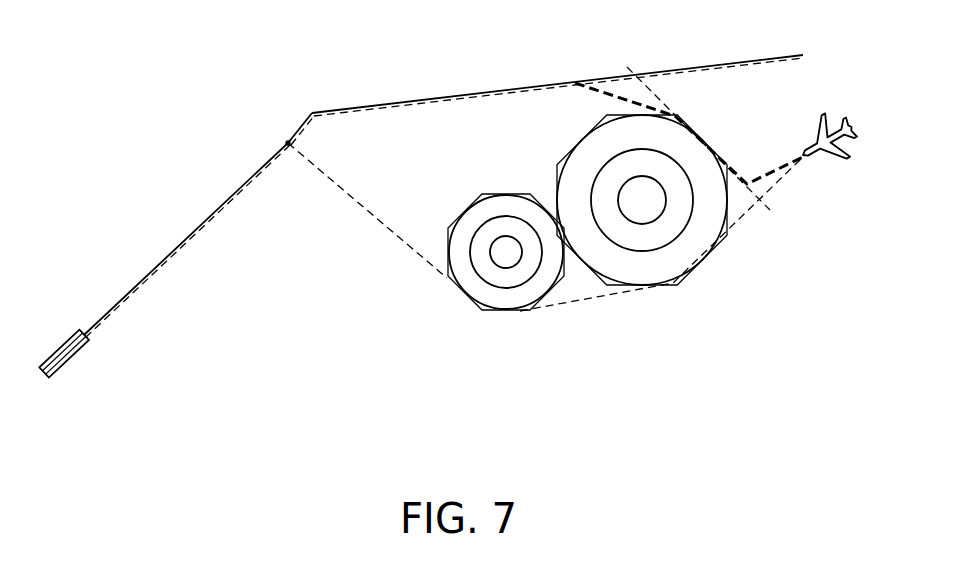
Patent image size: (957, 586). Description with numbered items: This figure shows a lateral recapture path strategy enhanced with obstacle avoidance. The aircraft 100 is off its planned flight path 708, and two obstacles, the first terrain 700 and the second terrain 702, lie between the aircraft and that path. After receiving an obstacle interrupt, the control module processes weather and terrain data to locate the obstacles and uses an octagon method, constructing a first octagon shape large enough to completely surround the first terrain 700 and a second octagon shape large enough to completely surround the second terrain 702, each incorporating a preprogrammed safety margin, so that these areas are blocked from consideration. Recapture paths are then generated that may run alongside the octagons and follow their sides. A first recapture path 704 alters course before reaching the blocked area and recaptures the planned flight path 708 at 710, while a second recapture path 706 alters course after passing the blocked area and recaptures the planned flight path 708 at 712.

The aircraft 100 is at (847, 160).
The terrain 1 700 is at (573, 153).
The terrain 2 702 is at (477, 210).
The first recapture path 704 is at (770, 170).
The second recapture path 706 is at (603, 297).
The planned flight path 708 is at (203, 220).
The recapture point of first recapture path 710 is at (575, 83).
The recapture point of second recapture path 712 is at (273, 93).